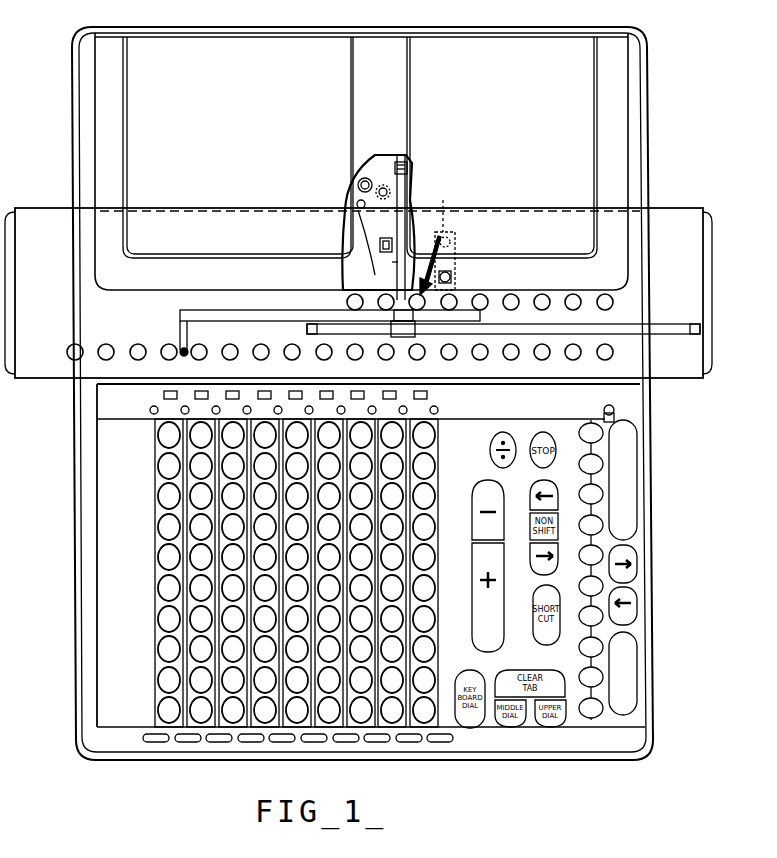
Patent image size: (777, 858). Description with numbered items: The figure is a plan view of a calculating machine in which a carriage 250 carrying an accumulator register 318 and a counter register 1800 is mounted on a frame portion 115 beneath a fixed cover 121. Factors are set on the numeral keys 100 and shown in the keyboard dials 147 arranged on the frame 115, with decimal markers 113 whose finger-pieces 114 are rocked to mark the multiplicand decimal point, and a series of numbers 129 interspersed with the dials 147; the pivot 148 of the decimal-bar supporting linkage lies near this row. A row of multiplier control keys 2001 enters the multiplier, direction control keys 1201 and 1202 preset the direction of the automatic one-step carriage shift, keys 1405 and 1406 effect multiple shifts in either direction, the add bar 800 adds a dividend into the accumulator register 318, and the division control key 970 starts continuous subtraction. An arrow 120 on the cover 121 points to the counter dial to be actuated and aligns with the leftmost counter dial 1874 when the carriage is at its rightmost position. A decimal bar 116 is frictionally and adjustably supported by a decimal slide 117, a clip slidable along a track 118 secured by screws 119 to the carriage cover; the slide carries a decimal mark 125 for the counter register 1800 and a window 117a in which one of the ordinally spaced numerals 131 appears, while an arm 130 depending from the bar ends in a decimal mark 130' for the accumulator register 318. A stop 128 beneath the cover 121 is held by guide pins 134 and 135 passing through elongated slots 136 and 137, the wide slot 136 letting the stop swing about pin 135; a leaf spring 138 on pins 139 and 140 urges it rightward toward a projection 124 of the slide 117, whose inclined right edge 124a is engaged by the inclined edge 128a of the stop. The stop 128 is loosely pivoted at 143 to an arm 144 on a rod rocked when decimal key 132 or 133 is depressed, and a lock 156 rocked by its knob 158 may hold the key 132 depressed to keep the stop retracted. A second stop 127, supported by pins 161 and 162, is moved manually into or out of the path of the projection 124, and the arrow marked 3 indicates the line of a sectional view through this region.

The cover 121 is at (618, 135).
The carriage 250 is at (684, 208).
The leftmost counter register dial 1874 is at (347, 300).
The counter register 1800 is at (620, 300).
The accumulator register 318 is at (66, 352).
The decimal bar 116 is at (238, 319).
The arm 130 is at (158, 335).
The decimal indicating mark 130' is at (155, 340).
The numerals 131 is at (268, 310).
The track 118 is at (598, 325).
The screws 119 is at (308, 334).
The projection 124 is at (415, 328).
The decimal slide 117 is at (386, 355).
The window 117a is at (412, 340).
The inclined right edge 124a is at (395, 286).
The decimal indicating mark 125 is at (398, 290).
The stop 128 is at (380, 246).
The arm 144 is at (410, 185).
The pivotal connection 143 is at (410, 160).
The guide pin 135 is at (382, 155).
The pin 140 is at (360, 182).
The elongated slot 137 is at (378, 191).
The pin 139 is at (357, 204).
The leaf spring 138 is at (358, 225).
The guide pin 134 is at (380, 244).
The elongated slot 136 is at (392, 262).
The inclined edge 128a is at (410, 240).
The section line 3 is at (445, 200).
The arrow 120 is at (436, 256).
The pin 162 is at (458, 233).
The pin 161 is at (452, 278).
The stop 127 is at (455, 262).
The keyboard decimal markers 113 is at (160, 607).
The keyboard indicating dials 147 is at (445, 398).
The numbers 129 is at (175, 400).
The pivot 148 is at (153, 414).
The numeral keys 100 is at (172, 643).
The finger-piece 114 is at (218, 742).
The frame portion 115 is at (140, 756).
The division control key 970 is at (510, 435).
The add bar 800 is at (475, 566).
The direction control key 1201 is at (552, 490).
The direction control key 1202 is at (558, 572).
The multiplier control keys 2001 is at (592, 718).
The lock 156 is at (603, 412).
The knob 158 is at (616, 412).
The decimal key 132 is at (626, 458).
The depressible key 1405 is at (636, 566).
The depressible key 1406 is at (636, 604).
The decimal key 133 is at (636, 660).